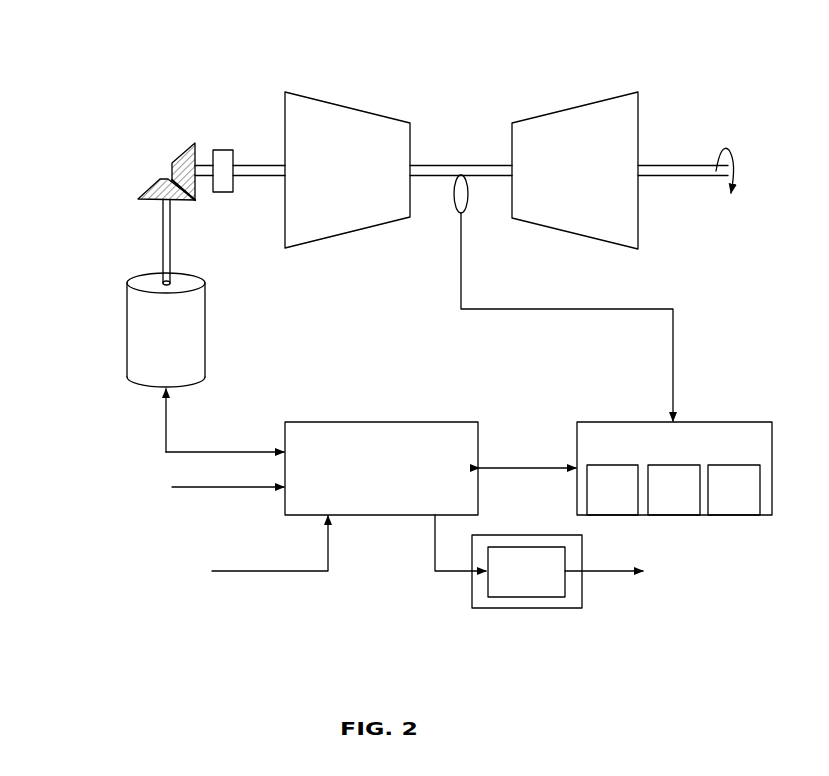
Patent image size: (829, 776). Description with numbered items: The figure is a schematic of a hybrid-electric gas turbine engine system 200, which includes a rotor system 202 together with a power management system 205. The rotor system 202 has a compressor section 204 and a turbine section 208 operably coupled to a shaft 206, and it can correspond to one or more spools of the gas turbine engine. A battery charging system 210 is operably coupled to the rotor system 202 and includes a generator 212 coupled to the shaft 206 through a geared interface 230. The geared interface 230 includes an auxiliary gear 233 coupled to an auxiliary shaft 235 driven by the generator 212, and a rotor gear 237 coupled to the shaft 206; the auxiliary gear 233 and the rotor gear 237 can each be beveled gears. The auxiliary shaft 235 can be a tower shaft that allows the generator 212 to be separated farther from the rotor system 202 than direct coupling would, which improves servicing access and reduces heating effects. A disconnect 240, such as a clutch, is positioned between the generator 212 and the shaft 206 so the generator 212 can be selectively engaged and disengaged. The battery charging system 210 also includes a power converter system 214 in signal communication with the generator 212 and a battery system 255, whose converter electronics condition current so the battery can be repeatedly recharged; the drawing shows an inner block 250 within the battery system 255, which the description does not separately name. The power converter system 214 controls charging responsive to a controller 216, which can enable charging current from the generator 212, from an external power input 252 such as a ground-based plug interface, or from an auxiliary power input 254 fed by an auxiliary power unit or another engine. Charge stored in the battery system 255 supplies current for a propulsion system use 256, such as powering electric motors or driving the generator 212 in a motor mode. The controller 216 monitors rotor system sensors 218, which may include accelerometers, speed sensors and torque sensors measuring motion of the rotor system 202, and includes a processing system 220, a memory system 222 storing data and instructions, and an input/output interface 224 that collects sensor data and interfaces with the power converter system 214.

The hybrid-electric gas turbine engine system 200 is at (103, 66).
The rotor system 202 is at (506, 84).
The compressor section 204 is at (350, 108).
The power management system 205 is at (726, 290).
The shaft 206 is at (263, 162).
The turbine section 208 is at (583, 106).
The battery charging system 210 is at (125, 401).
The generator 212 is at (124, 330).
The power converter system 214 is at (381, 468).
The controller 216 is at (674, 468).
The rotor system sensors 218 is at (457, 219).
The processing system 220 is at (612, 490).
The memory system 222 is at (674, 490).
The input/output interface 224 is at (734, 490).
The geared interface 230 is at (120, 158).
The auxiliary gear 233 is at (148, 188).
The auxiliary shaft 235 is at (160, 248).
The rotor gear 237 is at (178, 156).
The disconnect 240 is at (223, 195).
The display 250 is at (526, 572).
The power input 252 is at (250, 573).
The auxiliary power input 254 is at (218, 490).
The battery system 255 is at (562, 535).
The propulsion system use 256 is at (612, 575).